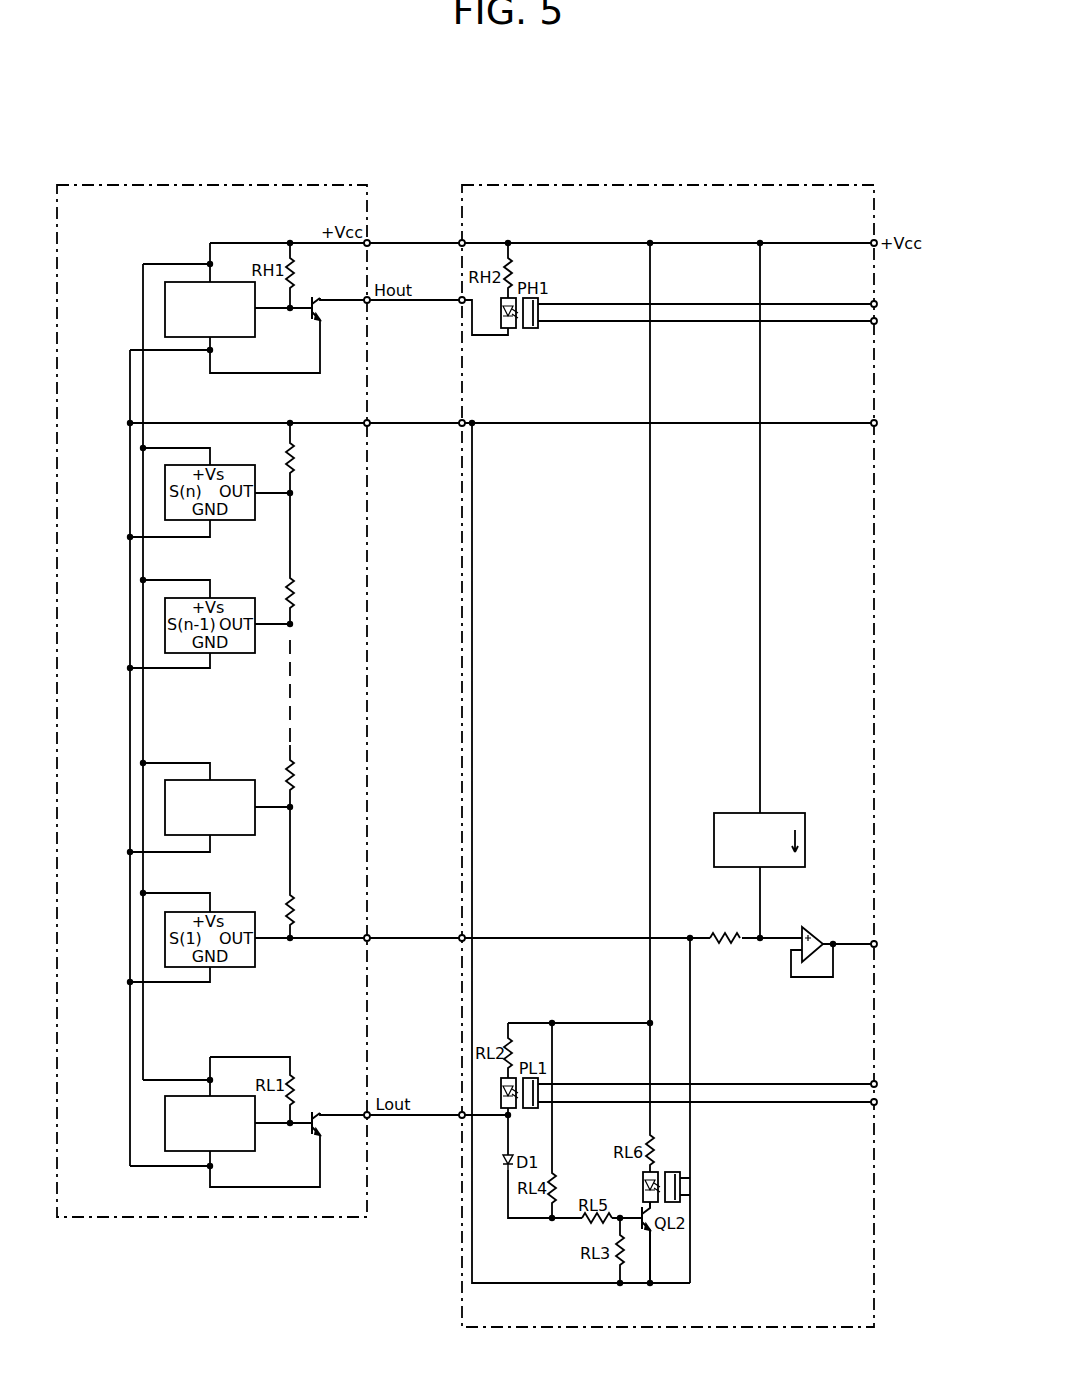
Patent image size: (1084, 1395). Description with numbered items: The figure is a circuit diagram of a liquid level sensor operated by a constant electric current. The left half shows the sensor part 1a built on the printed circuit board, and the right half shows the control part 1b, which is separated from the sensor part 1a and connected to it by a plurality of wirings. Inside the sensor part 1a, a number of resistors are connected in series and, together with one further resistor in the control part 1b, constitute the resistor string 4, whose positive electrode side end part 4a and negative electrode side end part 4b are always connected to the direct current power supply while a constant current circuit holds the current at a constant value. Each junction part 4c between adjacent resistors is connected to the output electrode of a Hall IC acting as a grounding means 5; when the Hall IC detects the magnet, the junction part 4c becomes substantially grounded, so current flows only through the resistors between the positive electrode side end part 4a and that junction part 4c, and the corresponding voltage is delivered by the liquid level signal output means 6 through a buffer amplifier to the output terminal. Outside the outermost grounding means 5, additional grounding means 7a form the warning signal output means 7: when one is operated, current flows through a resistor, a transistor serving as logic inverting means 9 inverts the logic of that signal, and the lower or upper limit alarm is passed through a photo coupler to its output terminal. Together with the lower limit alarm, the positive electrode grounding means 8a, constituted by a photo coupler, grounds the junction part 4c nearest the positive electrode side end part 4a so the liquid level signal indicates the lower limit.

The sensor part 1a is at (343, 185).
The control part 1b is at (718, 185).
The resistor string 4 is at (254, 764).
The positive electrode side end part 4a is at (760, 936).
The negative electrode side end part 4b is at (288, 423).
The junction part 4c is at (290, 807).
The grounding means 5 is at (165, 807).
The liquid level signal output means 6 is at (905, 957).
The warning signal output means 7 is at (912, 327).
The additional grounding means 7a is at (165, 305).
The positive electrode grounding means 8a is at (693, 1187).
The logic inverting means 9 is at (318, 285).